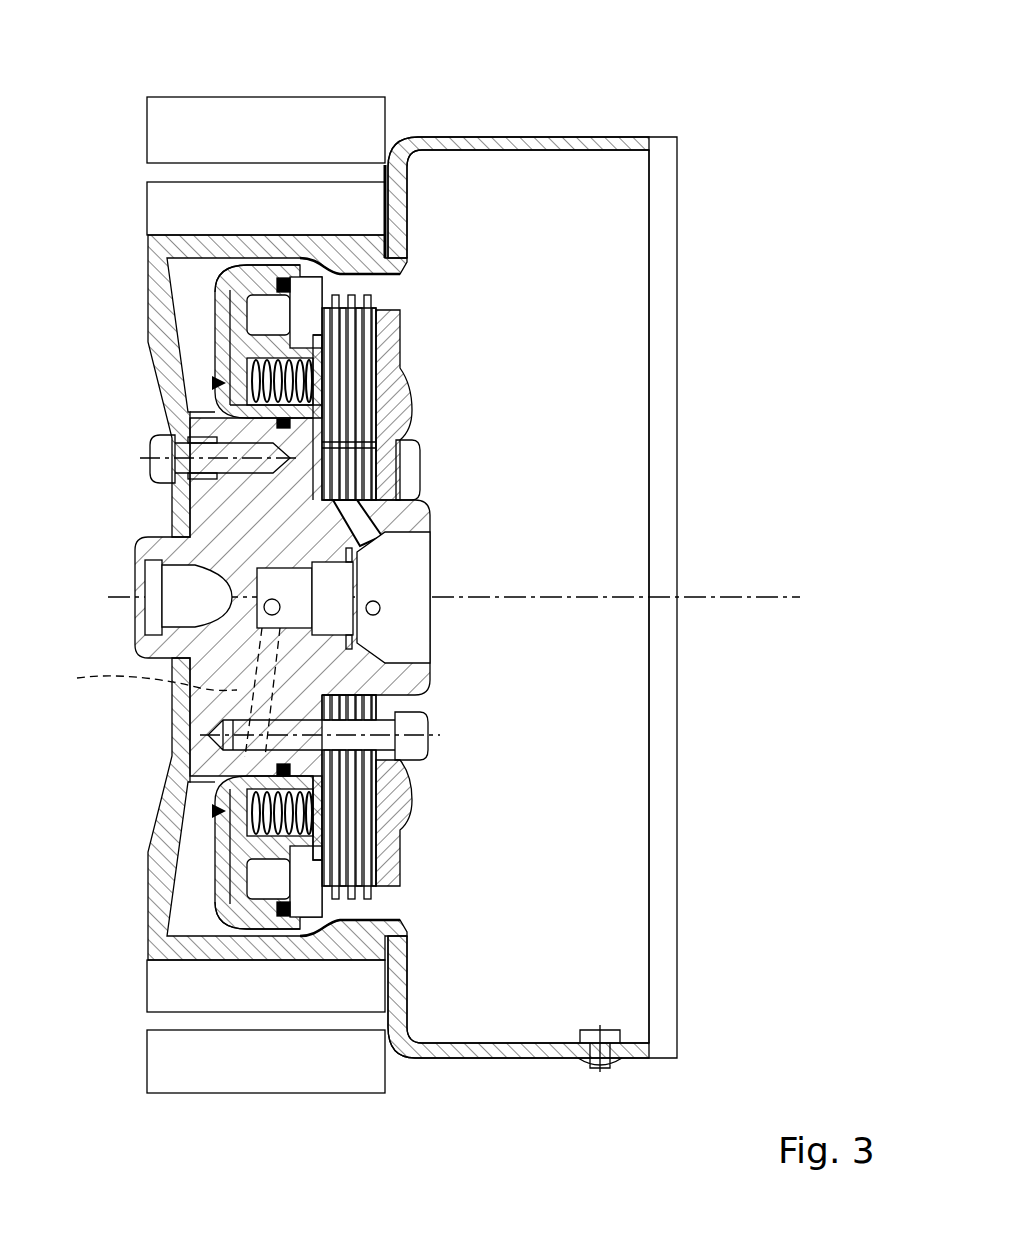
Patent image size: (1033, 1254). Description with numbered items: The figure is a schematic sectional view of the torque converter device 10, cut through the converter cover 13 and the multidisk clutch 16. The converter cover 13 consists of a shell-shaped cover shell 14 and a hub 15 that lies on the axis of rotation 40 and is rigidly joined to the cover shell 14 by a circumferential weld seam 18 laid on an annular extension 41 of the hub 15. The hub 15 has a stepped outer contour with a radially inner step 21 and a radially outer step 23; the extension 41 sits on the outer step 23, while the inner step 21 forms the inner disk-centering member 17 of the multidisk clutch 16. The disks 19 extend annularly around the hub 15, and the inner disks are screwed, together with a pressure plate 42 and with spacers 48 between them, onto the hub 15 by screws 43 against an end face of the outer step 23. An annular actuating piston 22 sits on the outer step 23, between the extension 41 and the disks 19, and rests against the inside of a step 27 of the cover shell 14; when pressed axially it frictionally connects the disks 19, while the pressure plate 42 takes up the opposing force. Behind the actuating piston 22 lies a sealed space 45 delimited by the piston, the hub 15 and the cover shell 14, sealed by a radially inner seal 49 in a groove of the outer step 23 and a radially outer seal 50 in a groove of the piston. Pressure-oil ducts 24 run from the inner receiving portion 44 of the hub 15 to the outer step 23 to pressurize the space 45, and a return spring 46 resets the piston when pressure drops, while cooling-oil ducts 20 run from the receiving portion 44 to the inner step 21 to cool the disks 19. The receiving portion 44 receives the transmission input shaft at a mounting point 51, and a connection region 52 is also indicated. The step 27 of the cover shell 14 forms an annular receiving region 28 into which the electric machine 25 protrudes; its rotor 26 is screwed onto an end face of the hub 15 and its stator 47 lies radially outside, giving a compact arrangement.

The torque converter device 10 is at (635, 66).
The converter cover 13 is at (590, 132).
The cover shell 14 is at (560, 137).
The hub 15 is at (203, 557).
The multidisk clutch 16 is at (423, 310).
The inner disk-centering member 17 is at (340, 470).
The weld seam 18 is at (210, 388).
The disk 19 is at (376, 368).
The cooling-oil duct 20 is at (330, 528).
The step 21 is at (395, 686).
The actuating piston 22 is at (282, 853).
The step 23 is at (277, 762).
The pressure-oil duct 24 is at (160, 692).
The electric machine 25 is at (140, 1022).
The rotor 26 is at (170, 995).
The step 27 is at (300, 238).
The receiving region 28 is at (372, 172).
The axis of rotation 40 is at (795, 597).
The extension 41 is at (220, 403).
The pressure plate 42 is at (400, 395).
The screw 43 is at (415, 766).
The receiving portion 44 is at (405, 627).
The space 45 is at (227, 335).
The return spring 46 is at (262, 833).
The stator 47 is at (205, 135).
The spacer 48 is at (350, 485).
The seal 49 is at (217, 720).
The seal 50 is at (220, 290).
The mounting point of the transmission input shaft 51 is at (345, 588).
The connection region 52 is at (138, 447).